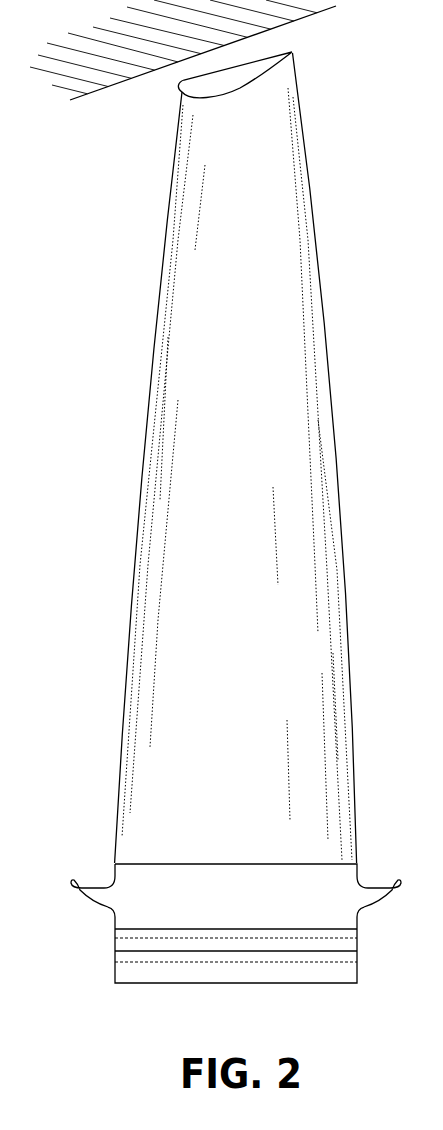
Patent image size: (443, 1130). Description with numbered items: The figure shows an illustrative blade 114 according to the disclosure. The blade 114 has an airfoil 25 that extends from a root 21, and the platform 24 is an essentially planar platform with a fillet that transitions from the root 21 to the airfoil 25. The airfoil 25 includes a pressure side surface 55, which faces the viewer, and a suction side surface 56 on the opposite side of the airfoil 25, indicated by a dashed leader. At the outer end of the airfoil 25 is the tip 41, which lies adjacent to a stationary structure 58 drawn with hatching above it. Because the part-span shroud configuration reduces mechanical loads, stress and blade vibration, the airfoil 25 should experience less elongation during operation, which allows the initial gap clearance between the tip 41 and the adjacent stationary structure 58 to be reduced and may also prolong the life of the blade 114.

The blade 114 is at (352, 215).
The root 21 is at (147, 965).
The platform 24 is at (140, 864).
The airfoil 25 is at (217, 563).
The tip 41 is at (268, 54).
The pressure side surface 55 is at (200, 423).
The suction side surface 56 is at (233, 366).
The stationary structure 58 is at (107, 87).